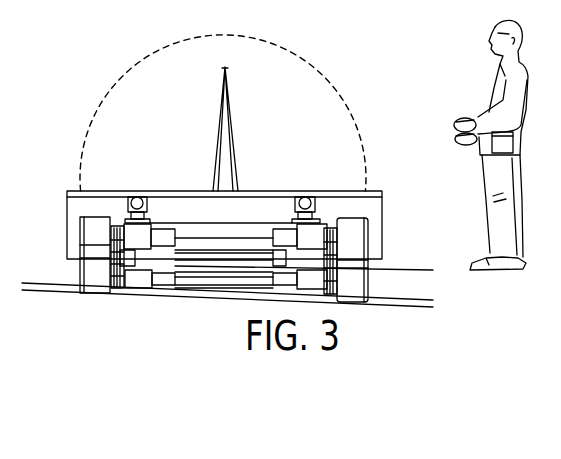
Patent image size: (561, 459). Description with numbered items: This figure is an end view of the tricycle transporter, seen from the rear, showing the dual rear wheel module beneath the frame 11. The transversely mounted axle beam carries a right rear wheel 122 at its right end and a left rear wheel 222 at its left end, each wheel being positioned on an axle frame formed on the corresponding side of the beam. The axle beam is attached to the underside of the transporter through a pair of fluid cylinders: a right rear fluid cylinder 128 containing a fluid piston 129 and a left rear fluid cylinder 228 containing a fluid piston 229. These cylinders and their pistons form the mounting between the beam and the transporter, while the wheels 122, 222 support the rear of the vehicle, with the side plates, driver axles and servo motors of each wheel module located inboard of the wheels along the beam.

The frame 11 is at (67, 222).
The right rear wheel 122 is at (360, 243).
The left rear wheel 222 is at (92, 246).
The right rear fluid cylinder 128 is at (312, 197).
The left rear fluid cylinder 228 is at (129, 197).
The fluid piston 129 is at (310, 214).
The fluid piston 229 is at (127, 218).